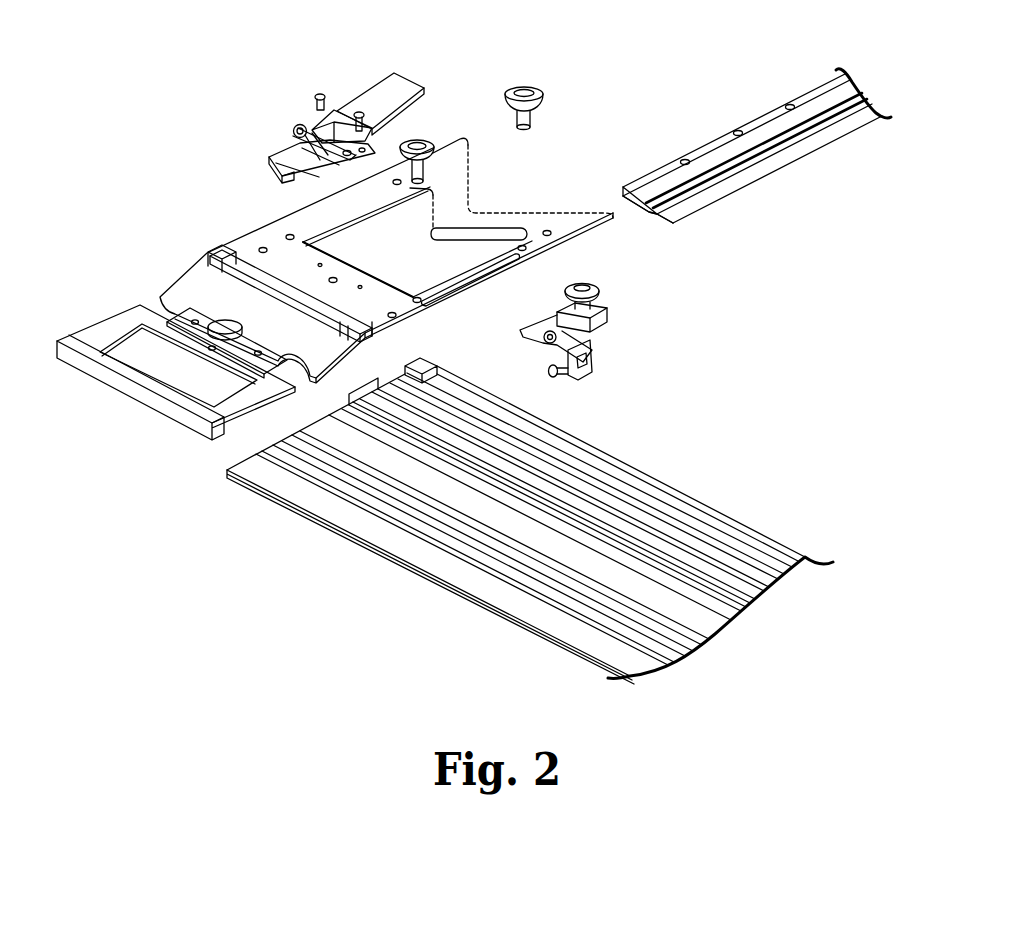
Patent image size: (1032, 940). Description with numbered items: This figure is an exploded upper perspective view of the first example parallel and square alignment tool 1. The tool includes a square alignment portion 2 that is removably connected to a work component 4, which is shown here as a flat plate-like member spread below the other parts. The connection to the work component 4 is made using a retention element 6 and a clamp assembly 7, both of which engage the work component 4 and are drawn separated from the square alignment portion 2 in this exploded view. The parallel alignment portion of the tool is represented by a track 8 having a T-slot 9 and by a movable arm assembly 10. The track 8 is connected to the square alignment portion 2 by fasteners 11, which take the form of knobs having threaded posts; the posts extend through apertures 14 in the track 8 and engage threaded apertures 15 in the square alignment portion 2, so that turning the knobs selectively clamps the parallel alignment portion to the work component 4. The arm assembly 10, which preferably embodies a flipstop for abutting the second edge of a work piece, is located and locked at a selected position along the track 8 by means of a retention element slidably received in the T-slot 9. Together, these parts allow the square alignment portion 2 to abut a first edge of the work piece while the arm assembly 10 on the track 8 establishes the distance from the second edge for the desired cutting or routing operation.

The parallel and square alignment tool 1 is at (769, 323).
The square alignment portion 2 is at (462, 162).
The work component 4 is at (260, 472).
The retention element 6 is at (210, 311).
The clamp assembly 7 is at (270, 135).
The track 8 is at (710, 147).
The T-slot 9 is at (654, 235).
The movable arm assembly 10 is at (634, 339).
The fasteners 11 is at (433, 126).
The apertures 14 is at (682, 160).
The threaded apertures 15 is at (526, 249).